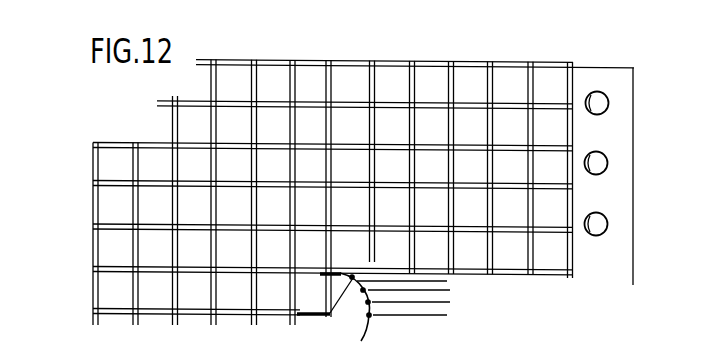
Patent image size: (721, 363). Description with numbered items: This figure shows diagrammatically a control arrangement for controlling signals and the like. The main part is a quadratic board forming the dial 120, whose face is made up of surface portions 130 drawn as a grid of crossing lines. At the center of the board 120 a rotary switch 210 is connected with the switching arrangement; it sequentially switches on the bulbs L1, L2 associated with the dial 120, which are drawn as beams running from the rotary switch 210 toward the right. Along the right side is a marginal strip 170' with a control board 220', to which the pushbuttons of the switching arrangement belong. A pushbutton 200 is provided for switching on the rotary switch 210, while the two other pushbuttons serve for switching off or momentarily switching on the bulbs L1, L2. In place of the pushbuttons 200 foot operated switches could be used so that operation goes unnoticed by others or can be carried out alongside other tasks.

The dial 120 is at (112, 142).
The surface portions 130 is at (105, 172).
The marginal guide strip of web 170' is at (573, 149).
The pushbutton 200 is at (610, 103).
The control board 220' is at (633, 176).
The rotary switch 210 is at (366, 324).
The bulb L1 is at (423, 289).
The bulb L2 is at (432, 314).